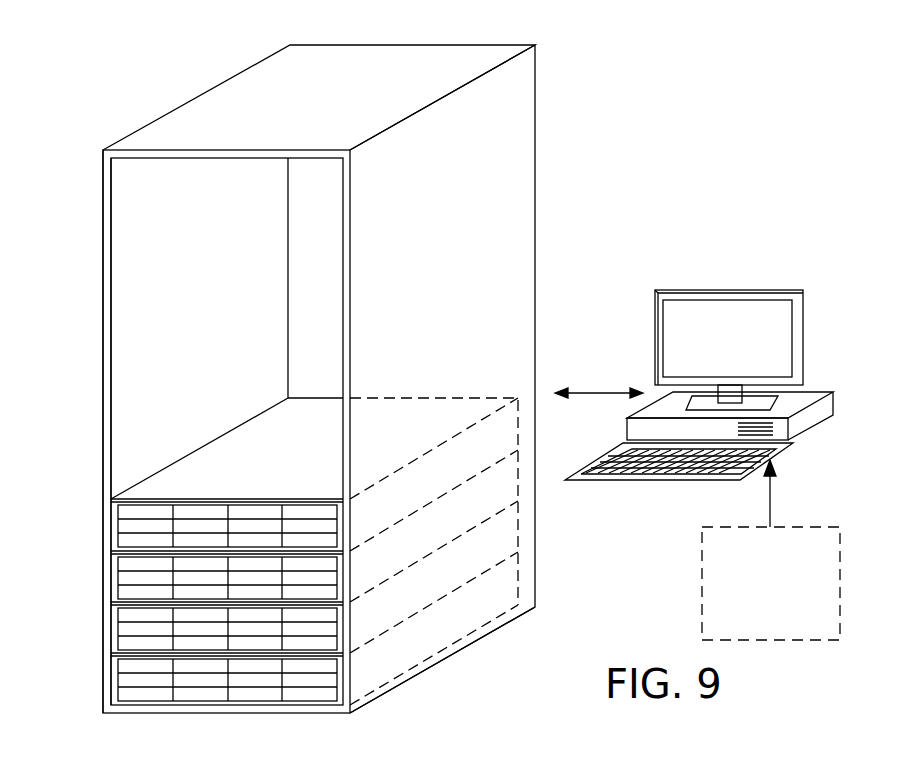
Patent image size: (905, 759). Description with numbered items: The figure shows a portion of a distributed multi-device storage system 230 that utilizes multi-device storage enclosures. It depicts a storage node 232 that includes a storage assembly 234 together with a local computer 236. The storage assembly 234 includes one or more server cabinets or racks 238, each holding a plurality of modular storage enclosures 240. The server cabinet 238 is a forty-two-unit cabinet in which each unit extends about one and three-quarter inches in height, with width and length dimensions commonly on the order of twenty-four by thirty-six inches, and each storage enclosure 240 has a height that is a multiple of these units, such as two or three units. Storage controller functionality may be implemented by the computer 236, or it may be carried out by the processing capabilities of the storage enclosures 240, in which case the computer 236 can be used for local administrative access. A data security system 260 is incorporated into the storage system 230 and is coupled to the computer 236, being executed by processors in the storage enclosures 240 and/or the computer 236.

The multi-device storage system 230 is at (672, 130).
The storage node 232 is at (238, 106).
The storage assembly 234 is at (102, 378).
The computer 236 is at (750, 289).
The server cabinet 238 is at (494, 216).
The modular storage enclosure 240 is at (276, 455).
The data security system 260 is at (803, 521).